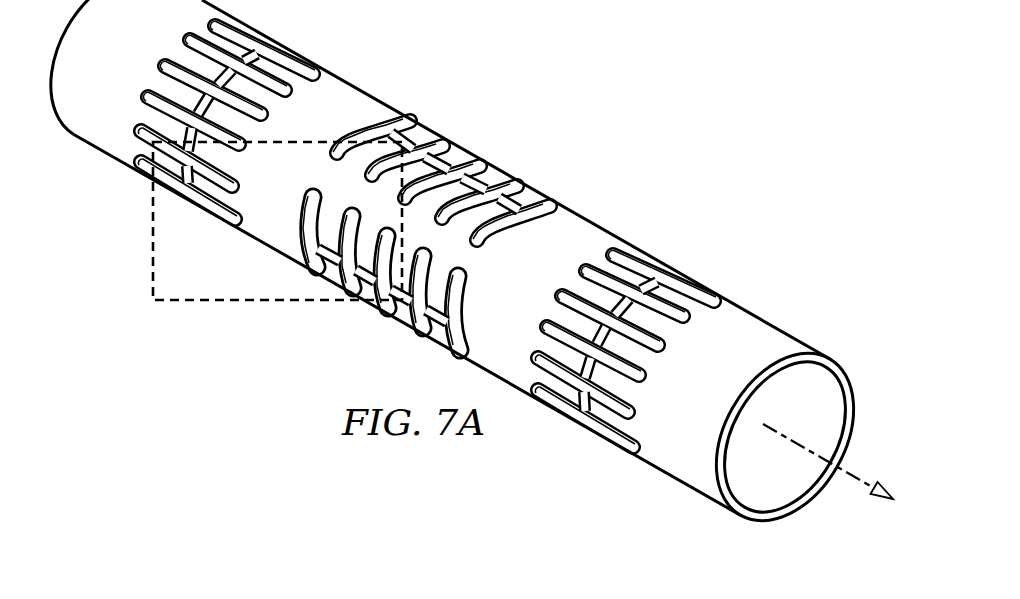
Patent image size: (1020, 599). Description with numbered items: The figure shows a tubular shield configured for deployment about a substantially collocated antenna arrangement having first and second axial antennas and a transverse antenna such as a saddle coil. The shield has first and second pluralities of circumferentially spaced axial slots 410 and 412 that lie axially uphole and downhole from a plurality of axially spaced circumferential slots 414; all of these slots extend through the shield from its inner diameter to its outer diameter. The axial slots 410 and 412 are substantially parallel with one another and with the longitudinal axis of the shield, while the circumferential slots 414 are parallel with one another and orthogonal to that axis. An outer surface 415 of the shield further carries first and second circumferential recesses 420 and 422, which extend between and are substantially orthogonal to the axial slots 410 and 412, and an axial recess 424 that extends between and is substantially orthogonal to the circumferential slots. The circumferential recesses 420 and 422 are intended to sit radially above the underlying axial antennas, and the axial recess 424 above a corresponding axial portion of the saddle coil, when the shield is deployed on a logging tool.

The axial slot 410 is at (168, 62).
The circumferential recess 420 is at (153, 128).
The circumferential slot 414 is at (358, 128).
The axial recess 424 is at (423, 153).
The outer surface 415 is at (585, 215).
The circumferential recess 422 is at (648, 285).
The axial slot 412 is at (657, 337).